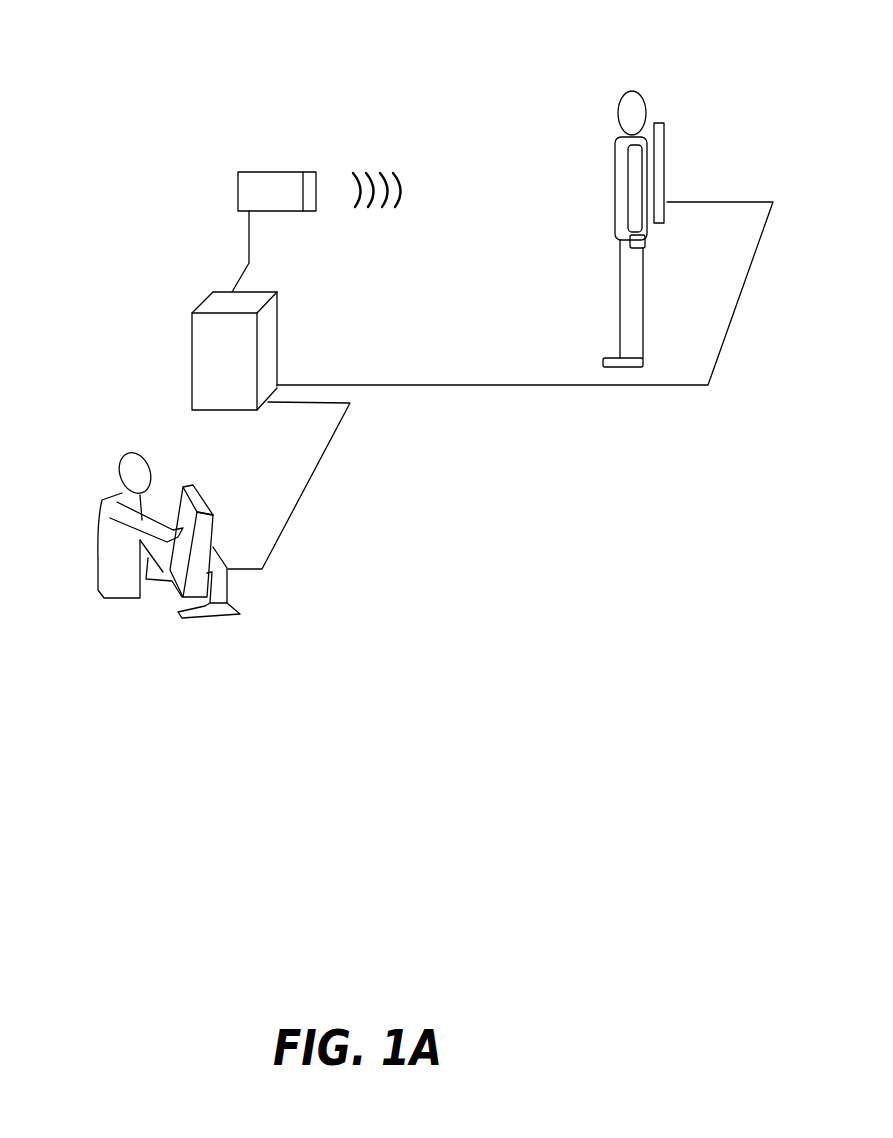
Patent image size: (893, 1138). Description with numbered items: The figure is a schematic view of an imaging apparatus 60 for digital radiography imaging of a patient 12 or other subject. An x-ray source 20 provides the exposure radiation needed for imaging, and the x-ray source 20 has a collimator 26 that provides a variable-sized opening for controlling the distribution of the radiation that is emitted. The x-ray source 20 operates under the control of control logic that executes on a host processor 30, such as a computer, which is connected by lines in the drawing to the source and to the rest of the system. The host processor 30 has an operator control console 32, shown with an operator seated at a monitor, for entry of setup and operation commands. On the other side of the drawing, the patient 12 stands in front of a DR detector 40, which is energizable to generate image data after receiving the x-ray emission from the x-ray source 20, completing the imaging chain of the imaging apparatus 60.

The imaging apparatus 60 is at (72, 95).
The x-ray source 20 is at (238, 185).
The collimator 26 is at (308, 211).
The host processor 30 is at (192, 343).
The operator control console 32 is at (178, 592).
The patient 12 is at (615, 168).
The DR detector 40 is at (657, 122).